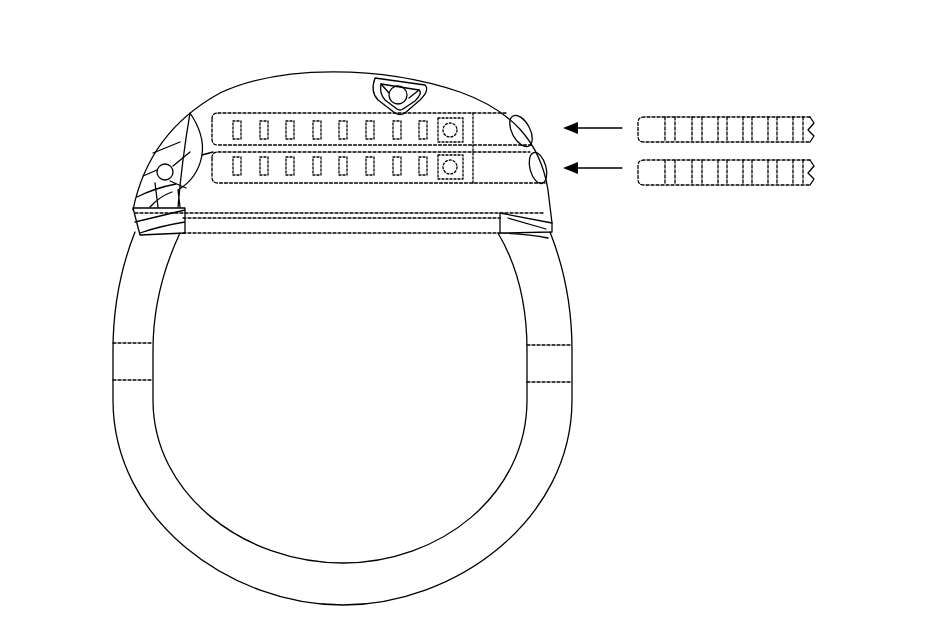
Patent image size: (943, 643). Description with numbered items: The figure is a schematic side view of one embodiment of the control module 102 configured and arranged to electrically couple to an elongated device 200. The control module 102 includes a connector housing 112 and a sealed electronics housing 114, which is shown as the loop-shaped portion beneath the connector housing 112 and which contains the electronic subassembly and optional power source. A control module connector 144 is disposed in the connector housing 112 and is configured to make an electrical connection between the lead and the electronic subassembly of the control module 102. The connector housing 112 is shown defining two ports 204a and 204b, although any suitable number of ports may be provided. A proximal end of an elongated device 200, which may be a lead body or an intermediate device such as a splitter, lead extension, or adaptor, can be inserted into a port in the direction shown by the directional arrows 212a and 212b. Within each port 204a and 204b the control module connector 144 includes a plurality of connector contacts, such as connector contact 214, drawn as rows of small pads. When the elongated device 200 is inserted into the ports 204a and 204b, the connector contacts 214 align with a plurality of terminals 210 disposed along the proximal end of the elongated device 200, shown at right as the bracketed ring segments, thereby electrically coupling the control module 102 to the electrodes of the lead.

The control module 102 is at (75, 83).
The connector housing 112 is at (163, 102).
The electronics housing 114 is at (90, 268).
The control module connector 144 is at (288, 113).
The connector contact 214 is at (237, 128).
The port 204a is at (531, 107).
The port 204b is at (558, 182).
The directional arrow 212a is at (596, 127).
The directional arrow 212b is at (603, 170).
The elongated device 200 is at (766, 90).
The terminals 210 is at (805, 107).